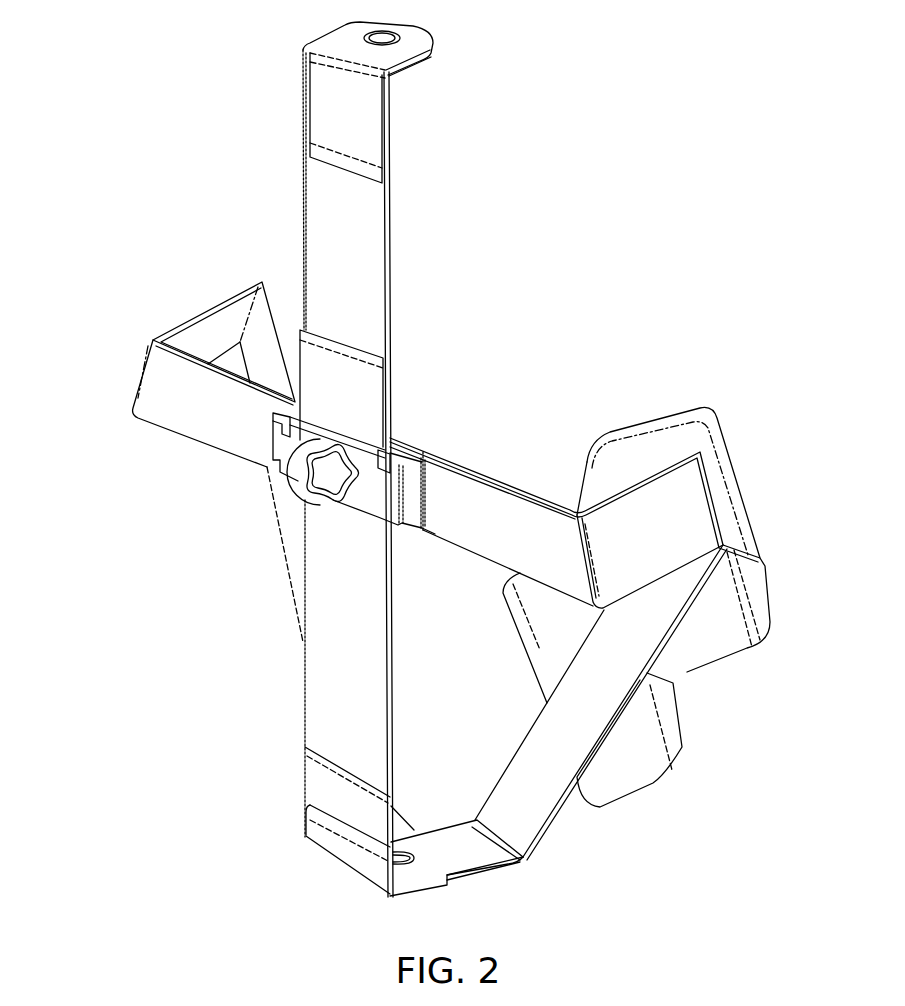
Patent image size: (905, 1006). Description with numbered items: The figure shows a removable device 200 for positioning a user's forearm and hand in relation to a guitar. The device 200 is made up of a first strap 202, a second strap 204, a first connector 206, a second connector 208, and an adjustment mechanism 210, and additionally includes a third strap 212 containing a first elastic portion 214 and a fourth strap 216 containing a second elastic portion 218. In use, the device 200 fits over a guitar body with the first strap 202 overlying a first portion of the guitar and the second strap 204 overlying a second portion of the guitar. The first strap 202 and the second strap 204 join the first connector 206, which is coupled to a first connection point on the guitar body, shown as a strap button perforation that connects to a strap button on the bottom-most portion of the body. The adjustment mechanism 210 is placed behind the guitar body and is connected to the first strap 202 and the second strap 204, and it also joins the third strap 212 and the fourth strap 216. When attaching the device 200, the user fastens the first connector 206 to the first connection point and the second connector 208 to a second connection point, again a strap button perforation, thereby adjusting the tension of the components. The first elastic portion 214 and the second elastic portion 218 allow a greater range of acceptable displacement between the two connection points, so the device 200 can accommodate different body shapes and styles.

The device 200 is at (560, 128).
The first strap 202 is at (617, 652).
The second strap 204 is at (172, 393).
The first connector 206 is at (330, 852).
The second connector 208 is at (347, 30).
The adjustment mechanism 210 is at (378, 472).
The third strap 212 is at (313, 677).
The first elastic portion 214 is at (330, 782).
The fourth strap 216 is at (313, 112).
The second elastic portion 218 is at (313, 218).